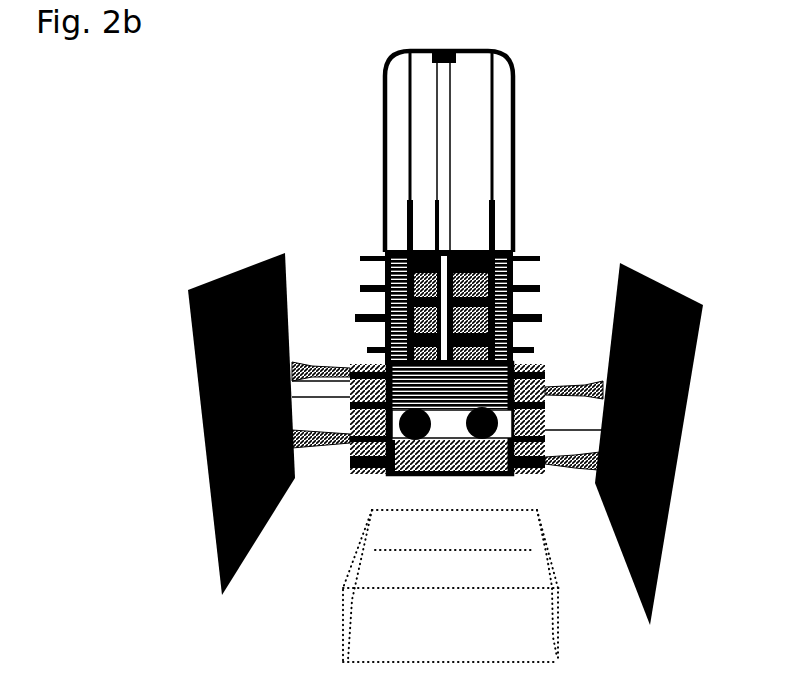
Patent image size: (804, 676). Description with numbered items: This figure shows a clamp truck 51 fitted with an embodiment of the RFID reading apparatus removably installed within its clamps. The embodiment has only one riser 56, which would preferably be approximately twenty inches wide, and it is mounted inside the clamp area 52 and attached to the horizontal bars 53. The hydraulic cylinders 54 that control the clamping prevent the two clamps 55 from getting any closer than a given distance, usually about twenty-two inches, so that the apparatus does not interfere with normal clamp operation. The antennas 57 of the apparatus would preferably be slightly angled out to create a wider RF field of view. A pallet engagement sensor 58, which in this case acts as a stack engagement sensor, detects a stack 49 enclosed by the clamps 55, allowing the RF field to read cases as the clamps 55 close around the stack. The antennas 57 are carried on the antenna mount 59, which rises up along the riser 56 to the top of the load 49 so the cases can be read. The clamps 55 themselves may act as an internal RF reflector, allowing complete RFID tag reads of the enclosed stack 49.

The stack 49 is at (345, 607).
The clamp truck 51 is at (333, 222).
The clamp area 52 is at (568, 556).
The horizontal bars 53 is at (338, 447).
The hydraulic cylinders 54 is at (336, 398).
The clamps 55 is at (205, 470).
The riser 56 is at (385, 147).
The antennas 57 is at (478, 426).
The pallet engagement sensor 58 is at (465, 475).
The antenna mount 59 is at (386, 472).